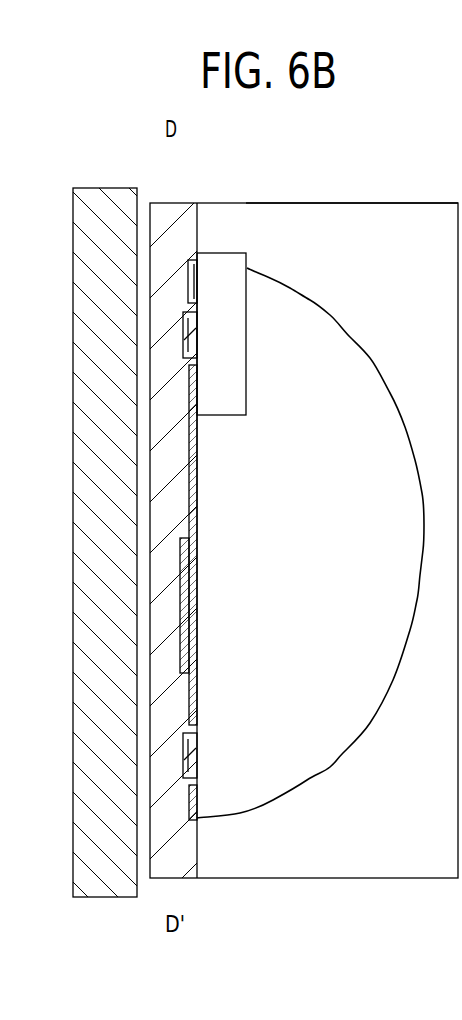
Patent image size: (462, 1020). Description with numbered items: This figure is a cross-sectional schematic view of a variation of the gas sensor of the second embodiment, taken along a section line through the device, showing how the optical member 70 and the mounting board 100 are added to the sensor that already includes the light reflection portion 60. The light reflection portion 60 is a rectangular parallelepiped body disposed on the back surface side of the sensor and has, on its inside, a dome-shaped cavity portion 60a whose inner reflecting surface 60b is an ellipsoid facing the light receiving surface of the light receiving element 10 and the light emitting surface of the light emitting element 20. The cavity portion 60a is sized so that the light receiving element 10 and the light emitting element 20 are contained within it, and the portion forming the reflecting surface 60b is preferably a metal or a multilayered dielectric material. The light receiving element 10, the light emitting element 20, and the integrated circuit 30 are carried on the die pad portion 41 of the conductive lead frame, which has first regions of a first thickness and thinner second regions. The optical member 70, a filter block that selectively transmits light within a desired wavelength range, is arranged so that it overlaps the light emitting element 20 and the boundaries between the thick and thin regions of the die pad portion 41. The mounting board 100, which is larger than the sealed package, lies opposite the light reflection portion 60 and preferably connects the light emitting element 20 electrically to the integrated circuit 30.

The mounting board 100 is at (107, 207).
The light reflection portion 60 is at (424, 855).
The cavity portion 60a is at (325, 363).
The reflecting surface 60b is at (322, 775).
The optical member 70 is at (222, 265).
The die pad portion 41 is at (195, 281).
The light emitting element 20 is at (193, 333).
The integrated circuit 30 is at (185, 597).
The light receiving element 10 is at (193, 760).